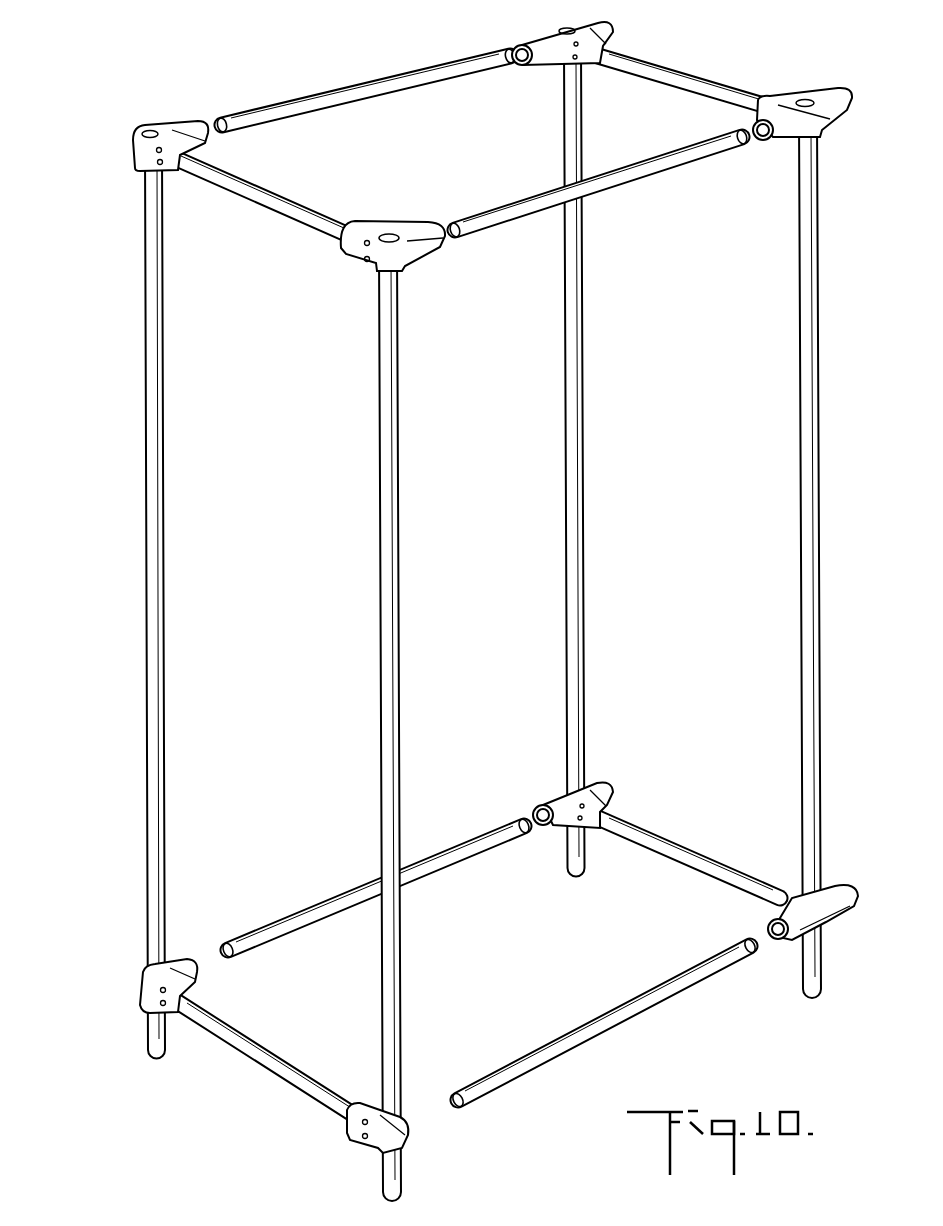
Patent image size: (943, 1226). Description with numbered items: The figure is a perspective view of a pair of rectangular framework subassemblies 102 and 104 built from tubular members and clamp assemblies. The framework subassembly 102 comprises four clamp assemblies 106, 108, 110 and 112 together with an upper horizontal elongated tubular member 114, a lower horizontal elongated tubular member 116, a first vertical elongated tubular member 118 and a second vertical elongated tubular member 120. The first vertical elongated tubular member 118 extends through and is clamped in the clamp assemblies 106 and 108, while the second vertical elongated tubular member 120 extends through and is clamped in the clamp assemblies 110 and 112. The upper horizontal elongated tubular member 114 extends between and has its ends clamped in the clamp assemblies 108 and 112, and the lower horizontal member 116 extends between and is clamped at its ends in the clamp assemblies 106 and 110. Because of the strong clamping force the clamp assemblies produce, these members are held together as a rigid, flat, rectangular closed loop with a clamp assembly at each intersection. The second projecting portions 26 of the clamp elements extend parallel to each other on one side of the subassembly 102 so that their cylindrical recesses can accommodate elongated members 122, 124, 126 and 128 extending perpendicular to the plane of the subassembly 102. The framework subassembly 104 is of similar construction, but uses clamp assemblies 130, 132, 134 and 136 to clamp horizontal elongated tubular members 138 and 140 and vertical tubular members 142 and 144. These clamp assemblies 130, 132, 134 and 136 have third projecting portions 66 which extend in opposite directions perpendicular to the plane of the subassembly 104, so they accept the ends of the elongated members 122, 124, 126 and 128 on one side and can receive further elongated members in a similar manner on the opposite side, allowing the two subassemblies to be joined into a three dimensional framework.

The second projecting portion 26 is at (189, 122).
The third projecting portion 66 is at (684, 488).
The framework subassembly 102 is at (265, 203).
The framework subassembly 104 is at (599, 459).
The clamp assembly 106 is at (370, 1142).
The clamp assembly 108 is at (418, 263).
The clamp assembly 110 is at (143, 992).
The clamp assembly 112 is at (135, 157).
The upper horizontal elongated tubular member 114 is at (288, 217).
The lower horizontal elongated tubular member 116 is at (273, 1080).
The first vertical elongated tubular member 118 is at (379, 686).
The second vertical elongated tubular member 120 is at (166, 746).
The elongated member 122 is at (643, 175).
The elongated member 124 is at (631, 1010).
The elongated member 126 is at (383, 78).
The elongated member 128 is at (333, 908).
The clamp assembly 130 is at (843, 922).
The clamp assembly 132 is at (820, 127).
The clamp assembly 134 is at (562, 790).
The clamp assembly 136 is at (543, 37).
The horizontal elongated tubular member 138 is at (712, 88).
The horizontal elongated tubular member 140 is at (700, 852).
The vertical tubular member 142 is at (797, 420).
The vertical tubular member 144 is at (570, 423).